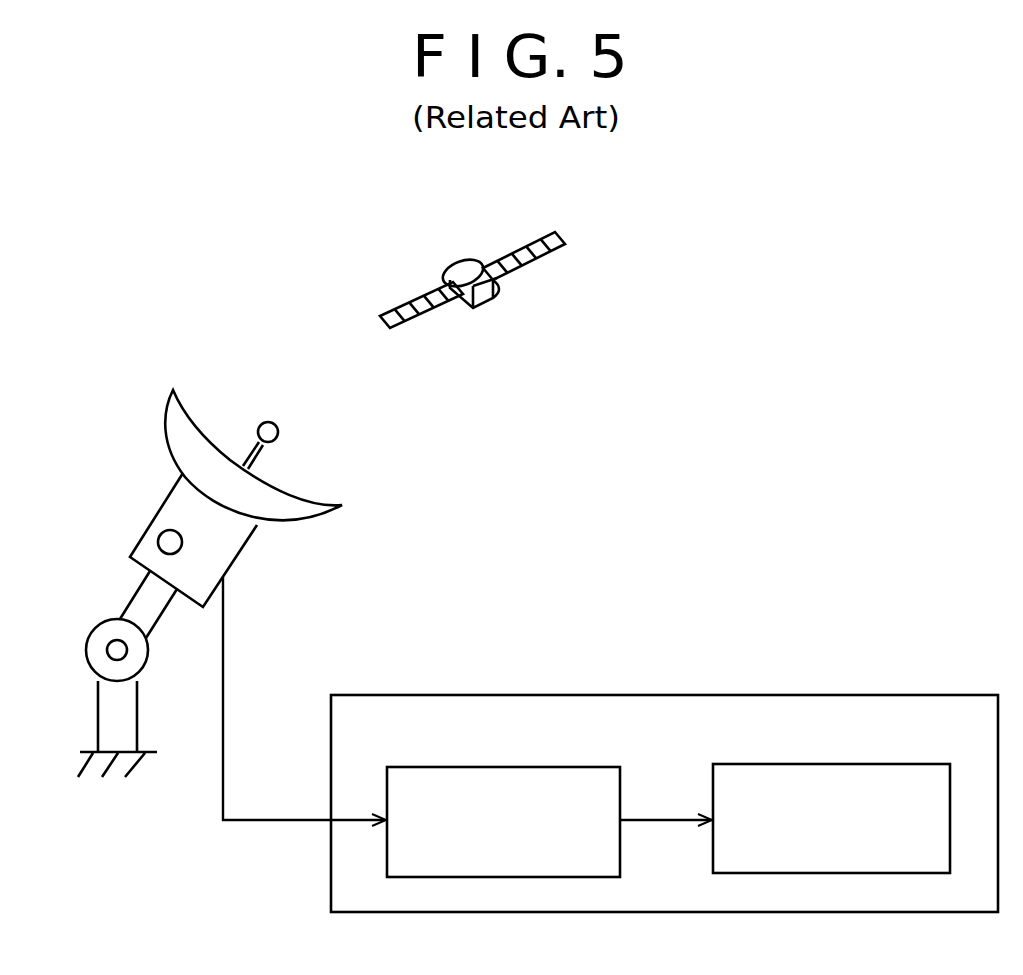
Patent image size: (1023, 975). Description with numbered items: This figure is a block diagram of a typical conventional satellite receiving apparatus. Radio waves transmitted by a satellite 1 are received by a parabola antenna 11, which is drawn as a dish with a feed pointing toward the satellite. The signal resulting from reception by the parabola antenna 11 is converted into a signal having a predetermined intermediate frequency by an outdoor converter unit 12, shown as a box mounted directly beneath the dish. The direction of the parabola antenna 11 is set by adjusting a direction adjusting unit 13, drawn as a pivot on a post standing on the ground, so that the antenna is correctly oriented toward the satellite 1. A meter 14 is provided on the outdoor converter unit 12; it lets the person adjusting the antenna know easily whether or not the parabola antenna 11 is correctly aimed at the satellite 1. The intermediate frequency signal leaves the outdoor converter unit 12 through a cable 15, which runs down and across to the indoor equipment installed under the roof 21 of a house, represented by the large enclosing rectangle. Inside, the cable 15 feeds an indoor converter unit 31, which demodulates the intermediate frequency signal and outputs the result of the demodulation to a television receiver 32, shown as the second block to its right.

The satellite 1 is at (447, 272).
The parabola antenna 11 is at (178, 423).
The outdoor converter unit 12 is at (215, 550).
The direction adjusting unit 13 is at (92, 652).
The meter 14 is at (164, 540).
The cable 15 is at (225, 650).
The roof 21 is at (682, 693).
The indoor converter unit 31 is at (473, 767).
The television receiver 32 is at (812, 763).